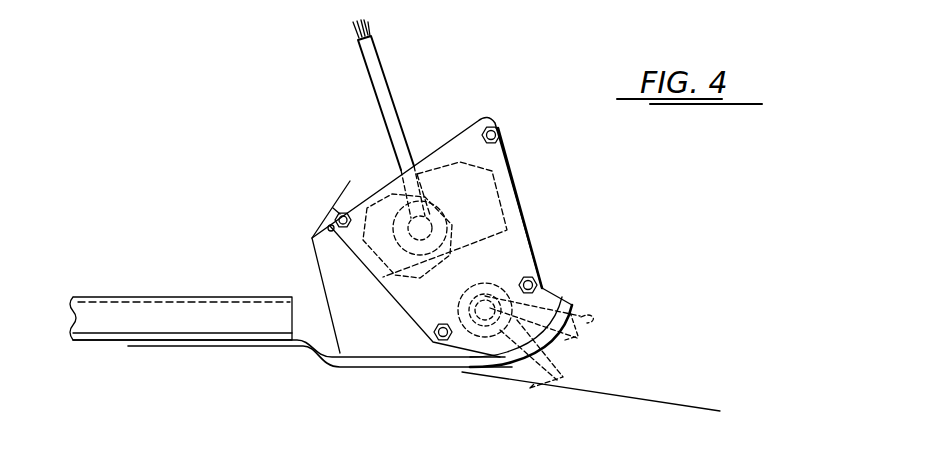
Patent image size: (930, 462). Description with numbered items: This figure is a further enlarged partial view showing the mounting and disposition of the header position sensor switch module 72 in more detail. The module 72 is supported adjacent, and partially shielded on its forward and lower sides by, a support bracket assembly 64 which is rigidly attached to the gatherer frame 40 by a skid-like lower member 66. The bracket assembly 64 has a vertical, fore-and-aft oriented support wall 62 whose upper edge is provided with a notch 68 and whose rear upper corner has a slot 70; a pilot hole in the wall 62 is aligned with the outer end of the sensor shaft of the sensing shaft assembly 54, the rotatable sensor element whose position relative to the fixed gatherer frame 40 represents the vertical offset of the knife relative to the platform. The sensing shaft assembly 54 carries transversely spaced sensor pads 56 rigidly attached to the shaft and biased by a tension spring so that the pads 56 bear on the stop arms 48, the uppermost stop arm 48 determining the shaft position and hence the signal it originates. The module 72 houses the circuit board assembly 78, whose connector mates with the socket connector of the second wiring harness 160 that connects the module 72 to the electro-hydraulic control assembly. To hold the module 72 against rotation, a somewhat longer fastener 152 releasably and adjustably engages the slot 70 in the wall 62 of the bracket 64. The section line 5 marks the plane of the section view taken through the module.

The gatherer frame 40 is at (160, 296).
The skid-like lower member 66 is at (367, 368).
The support wall 62 is at (323, 290).
The header position sensor switch module 72 is at (562, 206).
The sensing shaft assembly 54 is at (581, 349).
The sensor pads 56 is at (567, 377).
The stop arms 48 is at (634, 393).
The slot 70 is at (328, 227).
The fastener 152 is at (333, 208).
The notch 68 is at (390, 262).
The circuit board assembly 78 is at (493, 182).
The second wiring harness 160 is at (388, 78).
The section line 5- 5 is at (353, 153).
The support bracket assembly 64 is at (440, 372).